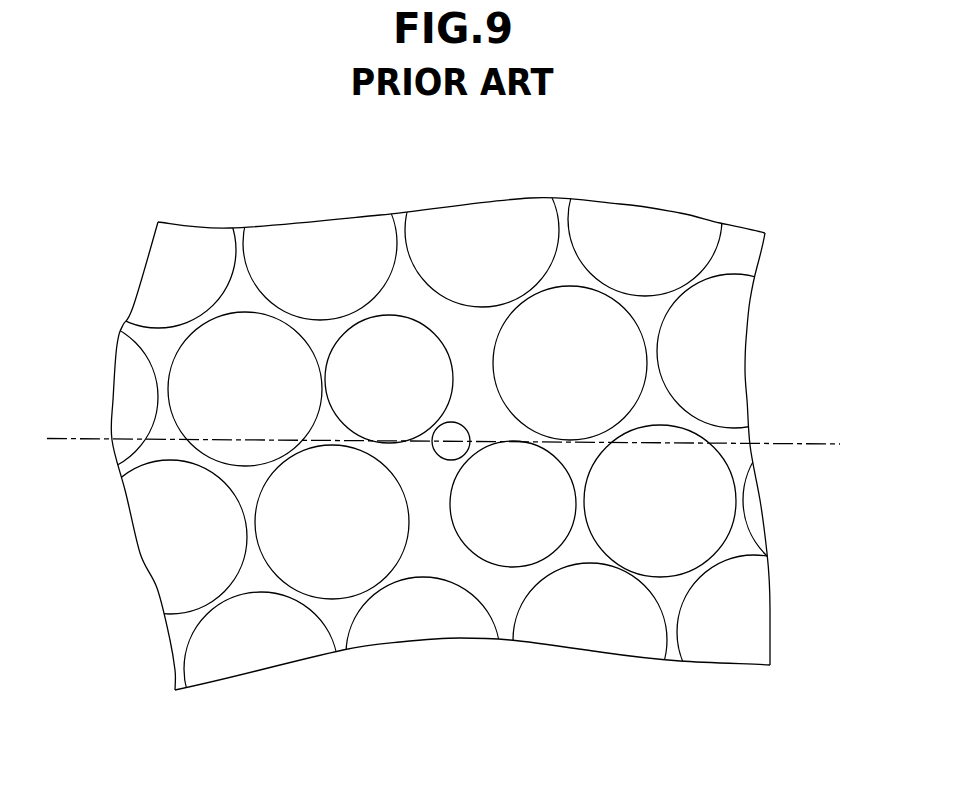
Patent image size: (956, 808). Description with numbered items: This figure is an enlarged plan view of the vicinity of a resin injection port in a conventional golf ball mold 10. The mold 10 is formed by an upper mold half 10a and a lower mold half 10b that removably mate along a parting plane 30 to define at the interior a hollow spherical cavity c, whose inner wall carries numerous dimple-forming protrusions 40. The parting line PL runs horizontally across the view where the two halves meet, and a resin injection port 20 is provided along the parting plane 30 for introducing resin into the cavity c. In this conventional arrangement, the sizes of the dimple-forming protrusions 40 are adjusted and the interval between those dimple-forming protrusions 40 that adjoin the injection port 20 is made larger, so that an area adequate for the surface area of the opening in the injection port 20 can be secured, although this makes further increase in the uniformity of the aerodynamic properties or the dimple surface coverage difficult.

The golf ball mold 10 is at (450, 426).
The upper mold half 10a is at (123, 325).
The lower mold half 10b is at (157, 588).
The resin injection port 20 is at (443, 455).
The parting plane 30 is at (441, 396).
The dimple-forming protrusions 40 is at (322, 257).
The hollow spherical cavity c is at (453, 330).
The parting line PL is at (92, 438).